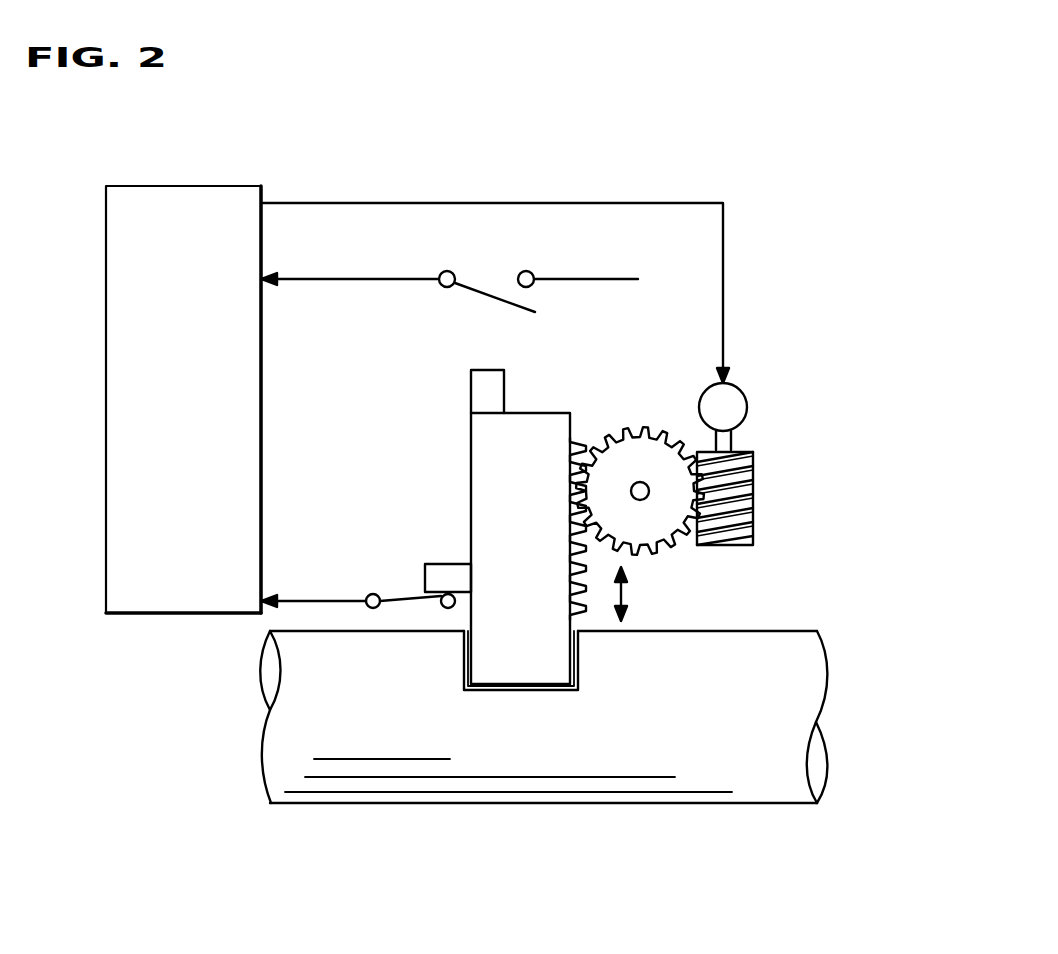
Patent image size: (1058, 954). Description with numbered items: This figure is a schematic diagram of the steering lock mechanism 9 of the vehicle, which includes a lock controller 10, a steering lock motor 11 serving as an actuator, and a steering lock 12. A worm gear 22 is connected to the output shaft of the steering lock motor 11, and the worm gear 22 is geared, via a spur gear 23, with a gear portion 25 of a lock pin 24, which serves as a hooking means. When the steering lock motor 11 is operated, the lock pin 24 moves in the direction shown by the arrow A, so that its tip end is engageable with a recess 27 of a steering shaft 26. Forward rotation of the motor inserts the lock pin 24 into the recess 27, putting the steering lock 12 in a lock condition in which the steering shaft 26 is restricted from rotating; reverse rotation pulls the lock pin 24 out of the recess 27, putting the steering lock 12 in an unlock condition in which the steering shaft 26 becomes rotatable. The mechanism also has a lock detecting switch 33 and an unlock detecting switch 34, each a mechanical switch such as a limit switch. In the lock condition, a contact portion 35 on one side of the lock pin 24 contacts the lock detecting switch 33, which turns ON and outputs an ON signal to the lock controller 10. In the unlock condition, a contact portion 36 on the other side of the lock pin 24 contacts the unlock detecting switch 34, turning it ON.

The steering lock mechanism 9 is at (826, 233).
The lock controller 10 is at (185, 615).
The steering lock motor 11 is at (749, 406).
The steering lock 12 is at (636, 339).
The worm gear 22 is at (755, 472).
The spur gear 23 is at (672, 548).
The lock pin 24 is at (551, 410).
The gear portion 25 is at (582, 598).
The steering shaft 26 is at (828, 668).
The recess 27 is at (530, 683).
The lock detecting switch 33 is at (401, 606).
The unlock detecting switch 34 is at (499, 296).
The contact portion 35 is at (425, 566).
The contact portion 36 is at (472, 370).
The arrow A is at (627, 598).